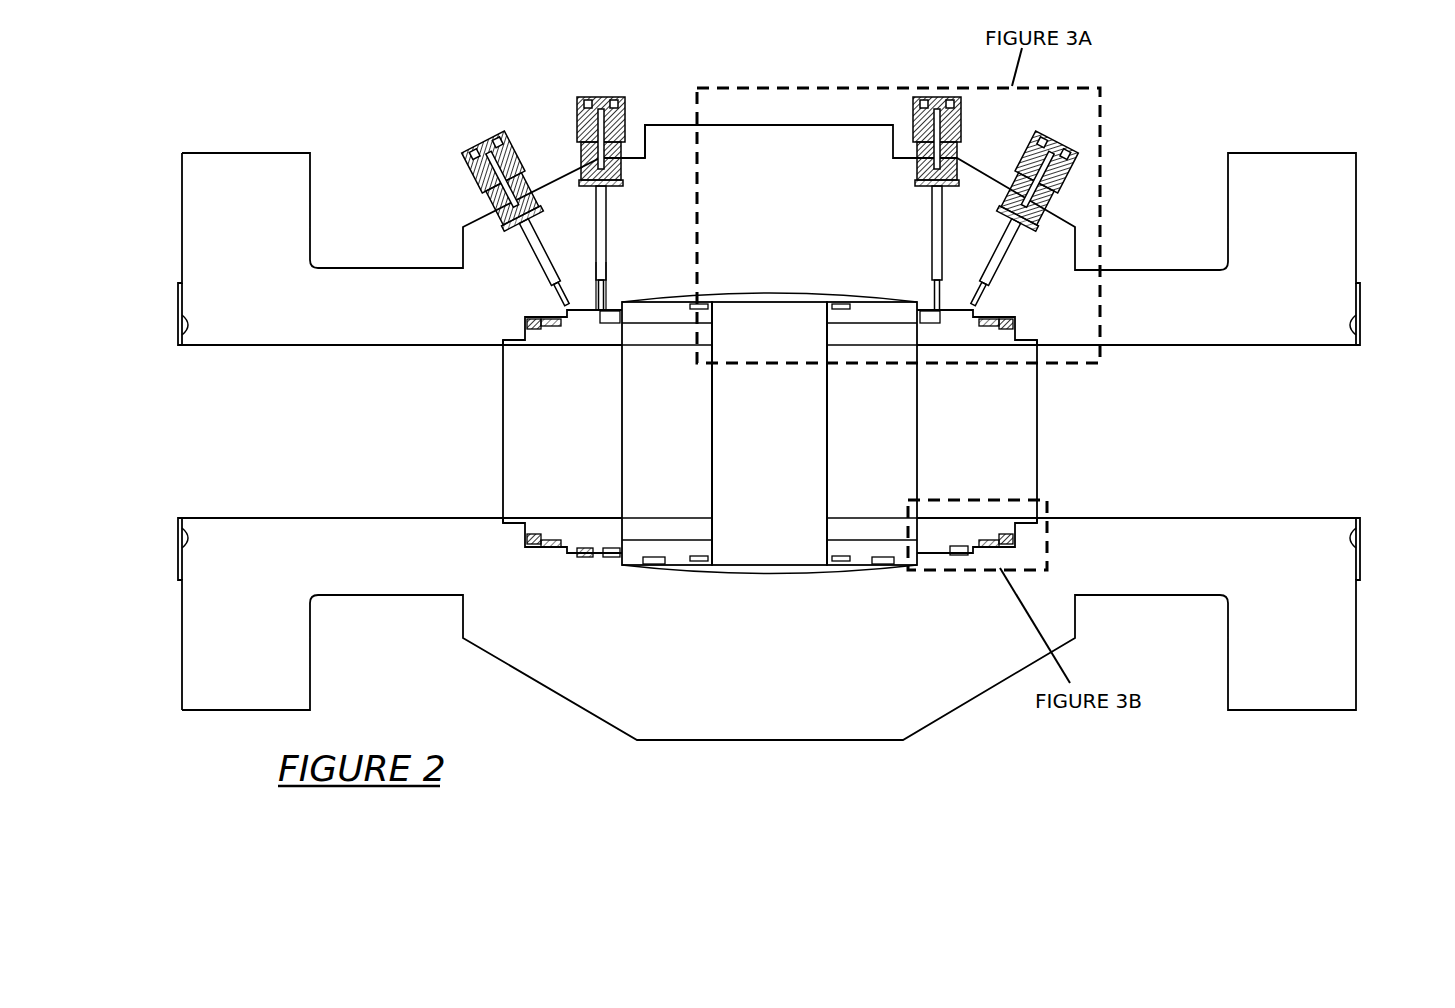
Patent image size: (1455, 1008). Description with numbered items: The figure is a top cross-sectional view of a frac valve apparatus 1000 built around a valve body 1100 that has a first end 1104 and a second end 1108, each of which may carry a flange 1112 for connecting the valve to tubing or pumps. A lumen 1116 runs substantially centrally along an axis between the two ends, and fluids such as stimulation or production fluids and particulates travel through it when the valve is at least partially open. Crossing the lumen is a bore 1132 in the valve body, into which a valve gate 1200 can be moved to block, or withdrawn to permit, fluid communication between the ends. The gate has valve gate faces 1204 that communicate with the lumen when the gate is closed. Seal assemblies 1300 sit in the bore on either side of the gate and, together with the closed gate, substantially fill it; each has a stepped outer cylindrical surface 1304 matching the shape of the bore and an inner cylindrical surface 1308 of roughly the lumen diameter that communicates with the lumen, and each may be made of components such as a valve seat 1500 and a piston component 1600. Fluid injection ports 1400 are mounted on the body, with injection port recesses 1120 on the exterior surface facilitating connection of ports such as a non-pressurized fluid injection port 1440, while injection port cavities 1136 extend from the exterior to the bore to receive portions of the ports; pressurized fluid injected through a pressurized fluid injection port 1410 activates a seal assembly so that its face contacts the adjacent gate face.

The frac valve apparatus 1000 is at (1224, 95).
The valve body 1100 is at (185, 638).
The first end 1104 is at (178, 300).
The second end 1108 is at (1358, 182).
The flange 1112 is at (275, 152).
The lumen 1116 is at (1255, 437).
The injection port recess 1120 is at (637, 158).
The bore 1132 is at (650, 303).
The injection port cavity 1136 is at (543, 282).
The valve gate 1200 is at (773, 563).
The valve gate face 1204 is at (712, 563).
The seal assembly 1300 is at (568, 555).
The outer cylindrical surface 1304 is at (632, 563).
The inner cylindrical surface 1308 is at (845, 520).
The fluid injection port 1400 is at (617, 92).
The pressurized fluid injection port 1410 is at (480, 143).
The non-pressurized fluid injection port 1440 is at (588, 97).
The valve seat 1500 is at (643, 563).
The piston component 1600 is at (573, 557).